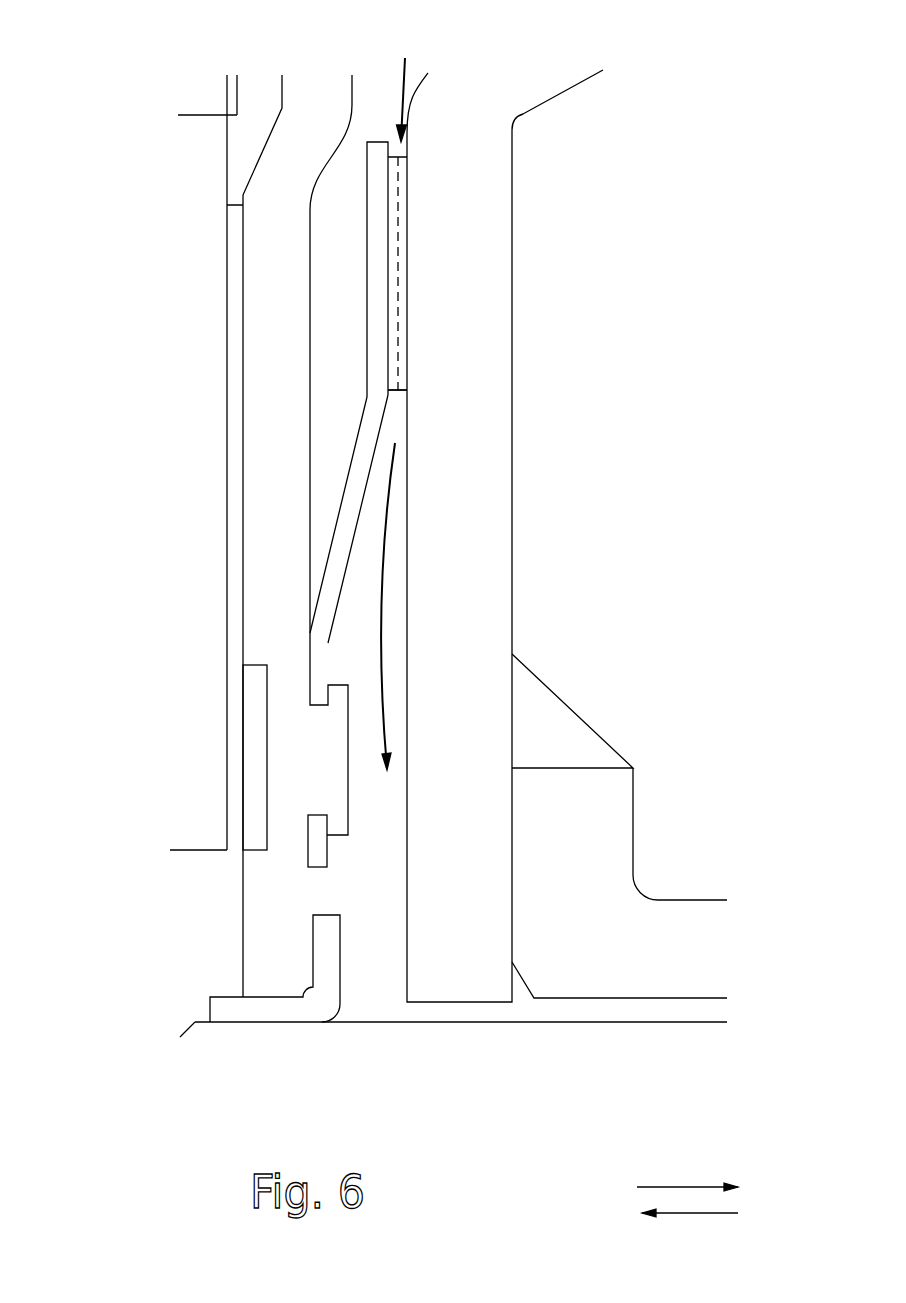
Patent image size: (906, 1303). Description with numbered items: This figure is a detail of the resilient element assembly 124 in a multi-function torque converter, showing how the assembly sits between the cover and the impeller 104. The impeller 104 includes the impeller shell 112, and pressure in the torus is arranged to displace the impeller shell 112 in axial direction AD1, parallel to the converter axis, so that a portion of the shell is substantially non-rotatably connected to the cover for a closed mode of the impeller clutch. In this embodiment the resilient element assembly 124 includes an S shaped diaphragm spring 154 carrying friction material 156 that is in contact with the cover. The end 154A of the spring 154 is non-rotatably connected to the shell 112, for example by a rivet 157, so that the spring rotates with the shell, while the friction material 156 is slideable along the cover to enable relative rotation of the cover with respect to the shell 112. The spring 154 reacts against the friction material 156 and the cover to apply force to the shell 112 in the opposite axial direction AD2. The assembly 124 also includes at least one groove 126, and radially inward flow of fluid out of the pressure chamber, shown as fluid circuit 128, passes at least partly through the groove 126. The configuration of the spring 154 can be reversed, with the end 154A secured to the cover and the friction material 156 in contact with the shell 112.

The impeller 104 is at (482, 617).
The impeller shell 112 is at (265, 588).
The resilient element assembly 124 is at (563, 363).
The groove 126 is at (408, 205).
The fluid circuit 128 is at (402, 82).
The S shaped diaphragm spring 154 is at (352, 452).
The end of spring 154A is at (322, 842).
The friction material 156 is at (402, 395).
The rivet 157 is at (317, 764).
The axial direction AD1 is at (677, 1187).
The axial direction AD2 is at (695, 1213).